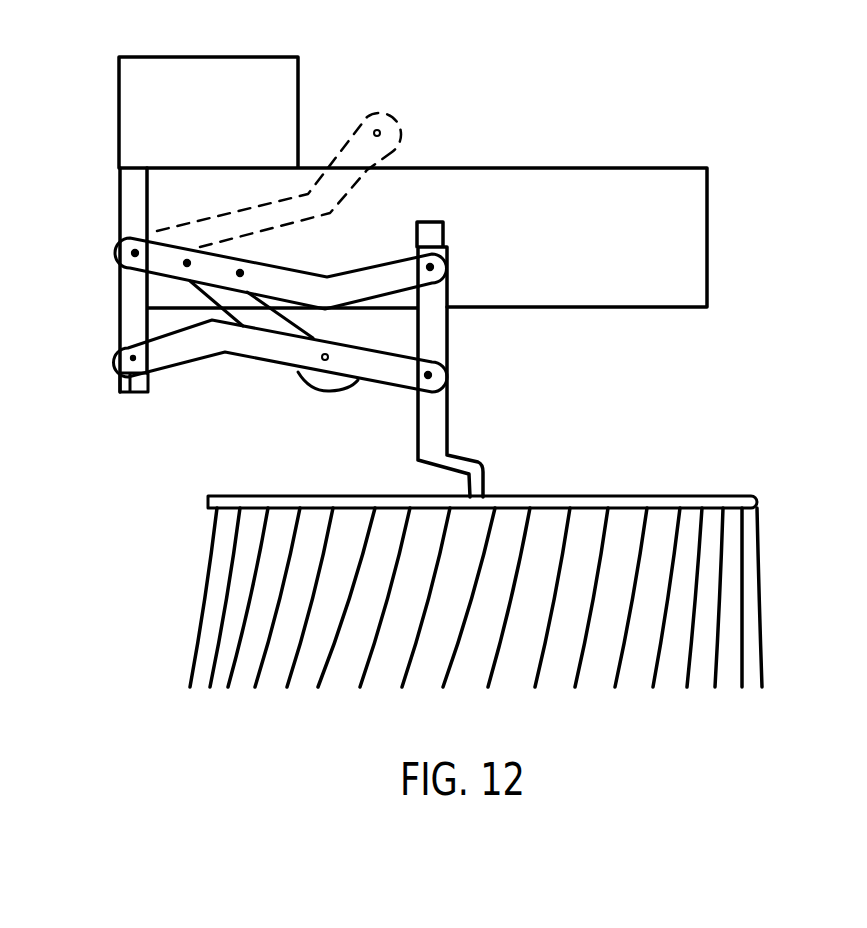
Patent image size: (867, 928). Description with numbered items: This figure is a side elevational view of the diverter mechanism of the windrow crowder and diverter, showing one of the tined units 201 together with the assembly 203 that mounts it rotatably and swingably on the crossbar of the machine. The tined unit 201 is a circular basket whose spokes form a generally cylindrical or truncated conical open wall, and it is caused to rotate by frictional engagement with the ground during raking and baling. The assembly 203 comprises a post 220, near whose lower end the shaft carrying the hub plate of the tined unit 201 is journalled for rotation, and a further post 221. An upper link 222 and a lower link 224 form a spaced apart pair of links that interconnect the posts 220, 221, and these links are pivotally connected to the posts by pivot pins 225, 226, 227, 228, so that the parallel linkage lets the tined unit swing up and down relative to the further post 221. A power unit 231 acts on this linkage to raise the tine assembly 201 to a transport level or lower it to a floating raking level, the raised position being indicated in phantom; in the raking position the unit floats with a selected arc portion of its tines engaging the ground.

The tined unit 201 is at (748, 472).
The assembly 203 is at (566, 60).
The post 220 is at (448, 330).
The further post 221 is at (133, 304).
The upper link 222 is at (296, 288).
The lower link 224 is at (233, 340).
The pivot pin 225 is at (447, 380).
The pivot pin 226 is at (444, 259).
The pivot pin 227 is at (127, 262).
The pivot pin 228 is at (133, 395).
The power unit 231 is at (247, 298).